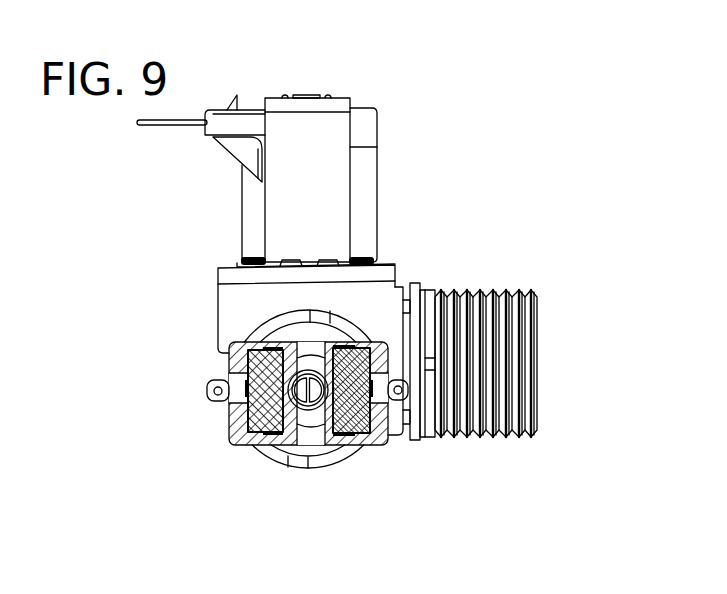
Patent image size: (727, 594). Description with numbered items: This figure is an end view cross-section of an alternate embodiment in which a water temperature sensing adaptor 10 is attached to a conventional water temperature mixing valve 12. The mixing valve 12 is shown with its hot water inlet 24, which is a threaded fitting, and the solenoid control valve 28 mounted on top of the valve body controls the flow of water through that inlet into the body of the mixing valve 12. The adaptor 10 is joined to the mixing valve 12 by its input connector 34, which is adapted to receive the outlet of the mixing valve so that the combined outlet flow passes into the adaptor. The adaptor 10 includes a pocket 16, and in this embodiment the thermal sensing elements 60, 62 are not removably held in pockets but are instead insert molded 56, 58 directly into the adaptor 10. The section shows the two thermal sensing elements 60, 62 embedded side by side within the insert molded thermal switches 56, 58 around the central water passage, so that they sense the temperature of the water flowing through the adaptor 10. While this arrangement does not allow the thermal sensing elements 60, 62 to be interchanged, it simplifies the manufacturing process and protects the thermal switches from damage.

The water temperature sensing adaptor 10 is at (351, 298).
The water temperature mixing valve 12 is at (380, 297).
The pocket 16 is at (212, 390).
The hot water inlet 24 is at (537, 349).
The solenoid control valve 28 is at (320, 108).
The input connector 34 is at (315, 462).
The insert molded thermal switch 56 is at (243, 367).
The insert molded thermal switch 58 is at (378, 440).
The thermal sensing element 60 is at (242, 425).
The thermal sensing element 62 is at (353, 453).